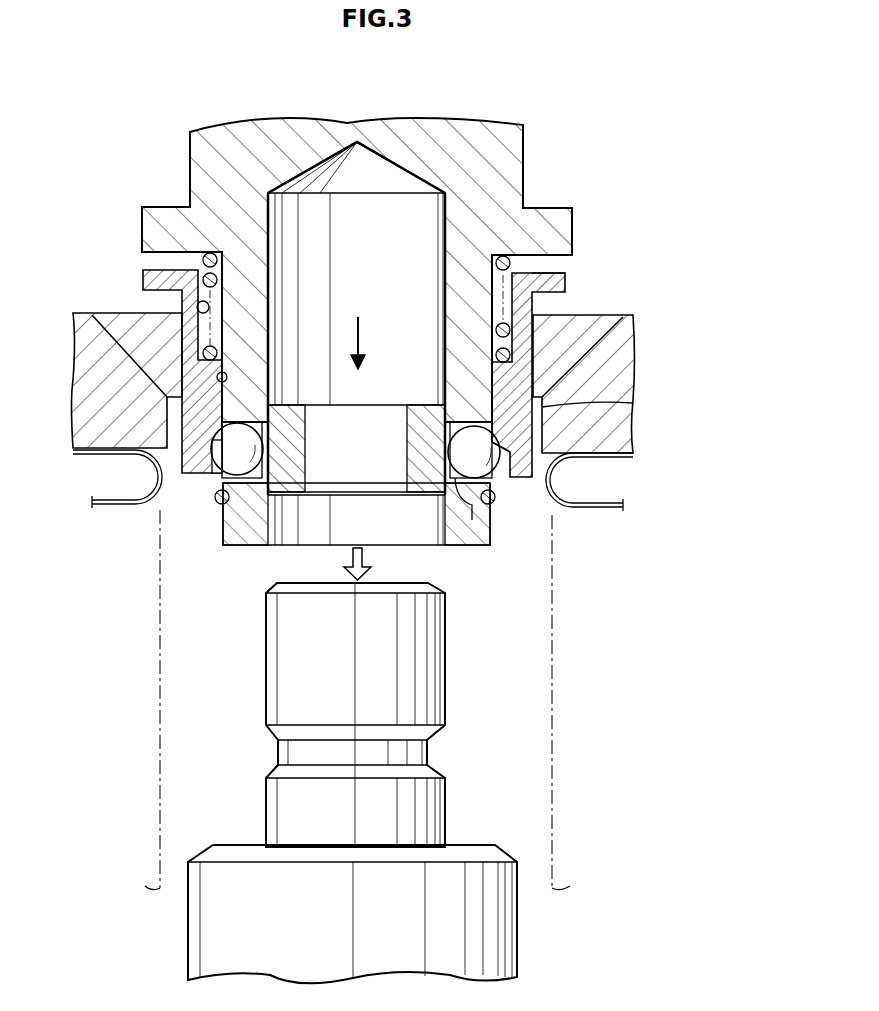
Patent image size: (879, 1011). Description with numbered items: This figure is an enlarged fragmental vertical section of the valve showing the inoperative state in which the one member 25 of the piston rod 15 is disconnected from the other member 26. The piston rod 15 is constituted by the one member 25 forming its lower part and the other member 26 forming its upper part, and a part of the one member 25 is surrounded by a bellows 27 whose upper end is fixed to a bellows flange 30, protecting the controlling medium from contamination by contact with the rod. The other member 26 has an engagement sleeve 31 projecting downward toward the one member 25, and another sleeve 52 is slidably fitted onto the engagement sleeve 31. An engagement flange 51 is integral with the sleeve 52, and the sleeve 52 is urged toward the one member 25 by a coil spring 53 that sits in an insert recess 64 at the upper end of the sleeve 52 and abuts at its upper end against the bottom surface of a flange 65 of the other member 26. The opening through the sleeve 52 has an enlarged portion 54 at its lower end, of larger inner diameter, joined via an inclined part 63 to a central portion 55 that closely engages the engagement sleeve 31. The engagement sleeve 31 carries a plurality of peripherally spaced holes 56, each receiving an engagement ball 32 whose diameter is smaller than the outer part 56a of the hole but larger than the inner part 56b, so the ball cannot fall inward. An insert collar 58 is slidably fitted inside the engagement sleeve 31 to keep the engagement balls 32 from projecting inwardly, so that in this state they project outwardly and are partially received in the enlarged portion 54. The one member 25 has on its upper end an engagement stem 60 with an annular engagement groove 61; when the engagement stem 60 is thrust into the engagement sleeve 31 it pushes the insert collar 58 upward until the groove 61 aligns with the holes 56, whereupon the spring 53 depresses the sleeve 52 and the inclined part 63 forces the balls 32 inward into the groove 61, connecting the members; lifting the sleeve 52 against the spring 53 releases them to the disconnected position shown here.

The piston rod 15 is at (190, 155).
The one member 25 is at (517, 920).
The other member 26 is at (337, 247).
The bellows 27 is at (608, 513).
The bellows flange 30 is at (620, 436).
The engagement sleeve 31 is at (580, 374).
The engagement balls 32 is at (457, 453).
The engagement flange 51 is at (565, 282).
The sleeve 52 is at (522, 410).
The coil spring 53 is at (512, 266).
The enlarged portion 54 is at (207, 474).
The central portion 55 is at (222, 377).
The holes 56 is at (380, 477).
The outer part of the hole 56a is at (473, 503).
The inner part of the hole 56b is at (443, 505).
The insert collar 58 is at (422, 405).
The engagement stem 60 is at (385, 715).
The annular engagement groove 61 is at (445, 752).
The inclined part 63 is at (222, 422).
The insert recess 64 is at (203, 307).
The flange 65 is at (142, 230).